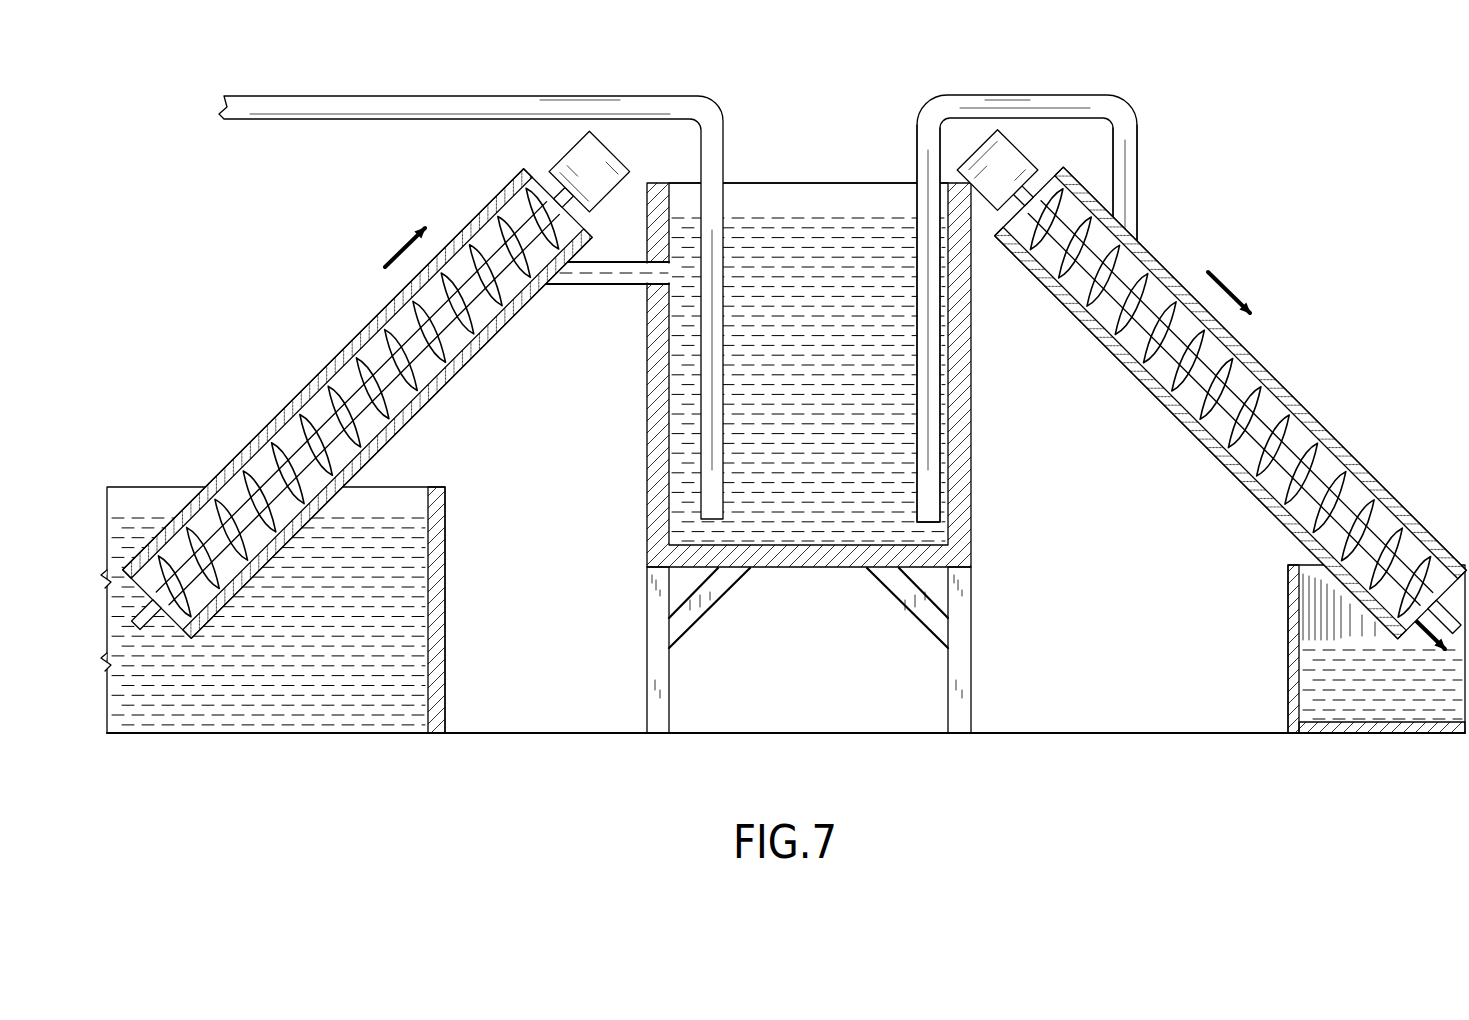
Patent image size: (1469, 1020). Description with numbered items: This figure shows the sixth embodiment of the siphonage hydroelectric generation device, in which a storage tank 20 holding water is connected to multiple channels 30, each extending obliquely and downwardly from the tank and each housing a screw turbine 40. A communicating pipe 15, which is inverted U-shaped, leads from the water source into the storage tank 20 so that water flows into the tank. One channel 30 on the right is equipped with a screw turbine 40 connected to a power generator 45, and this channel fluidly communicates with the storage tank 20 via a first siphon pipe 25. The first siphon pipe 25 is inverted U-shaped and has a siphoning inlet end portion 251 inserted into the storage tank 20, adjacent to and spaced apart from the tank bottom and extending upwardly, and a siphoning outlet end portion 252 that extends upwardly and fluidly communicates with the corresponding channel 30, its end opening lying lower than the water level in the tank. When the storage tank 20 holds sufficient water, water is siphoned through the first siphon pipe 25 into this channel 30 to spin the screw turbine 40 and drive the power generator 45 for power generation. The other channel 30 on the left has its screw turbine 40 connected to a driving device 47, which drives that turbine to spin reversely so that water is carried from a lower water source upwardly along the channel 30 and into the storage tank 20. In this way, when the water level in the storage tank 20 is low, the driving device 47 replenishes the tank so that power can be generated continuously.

The communicating pipe 15 is at (222, 100).
The storage tank 20 is at (848, 168).
The first siphon pipe 25 is at (1084, 296).
The siphoning inlet end portion 251 is at (930, 520).
The siphoning outlet end portion 252 is at (1141, 263).
The channel 30 is at (230, 462).
The screw turbine 40 is at (296, 410).
The power generator 45 is at (1010, 178).
The driving device 47 is at (575, 170).